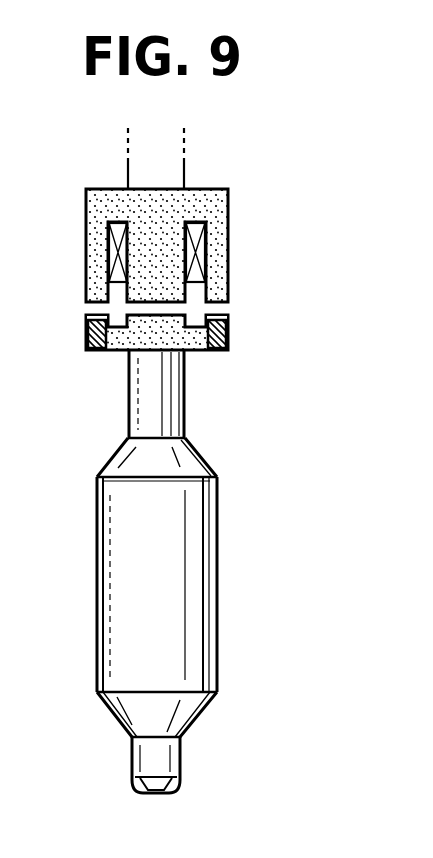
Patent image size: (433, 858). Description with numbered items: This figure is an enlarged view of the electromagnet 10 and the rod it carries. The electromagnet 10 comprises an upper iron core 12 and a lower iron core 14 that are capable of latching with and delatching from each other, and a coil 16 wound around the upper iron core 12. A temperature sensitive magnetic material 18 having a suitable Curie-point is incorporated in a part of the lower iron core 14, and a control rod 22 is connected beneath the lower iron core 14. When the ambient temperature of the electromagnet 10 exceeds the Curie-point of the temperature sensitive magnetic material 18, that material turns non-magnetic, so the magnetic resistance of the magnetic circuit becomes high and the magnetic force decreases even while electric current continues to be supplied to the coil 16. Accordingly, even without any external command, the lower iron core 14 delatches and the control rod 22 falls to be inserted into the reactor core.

The electromagnet 10 is at (184, 268).
The upper iron core 12 is at (229, 255).
The lower iron core 14 is at (229, 334).
The coil 16 is at (112, 253).
The temperature sensitive magnetic material 18 is at (85, 338).
The control rod 22 is at (207, 592).